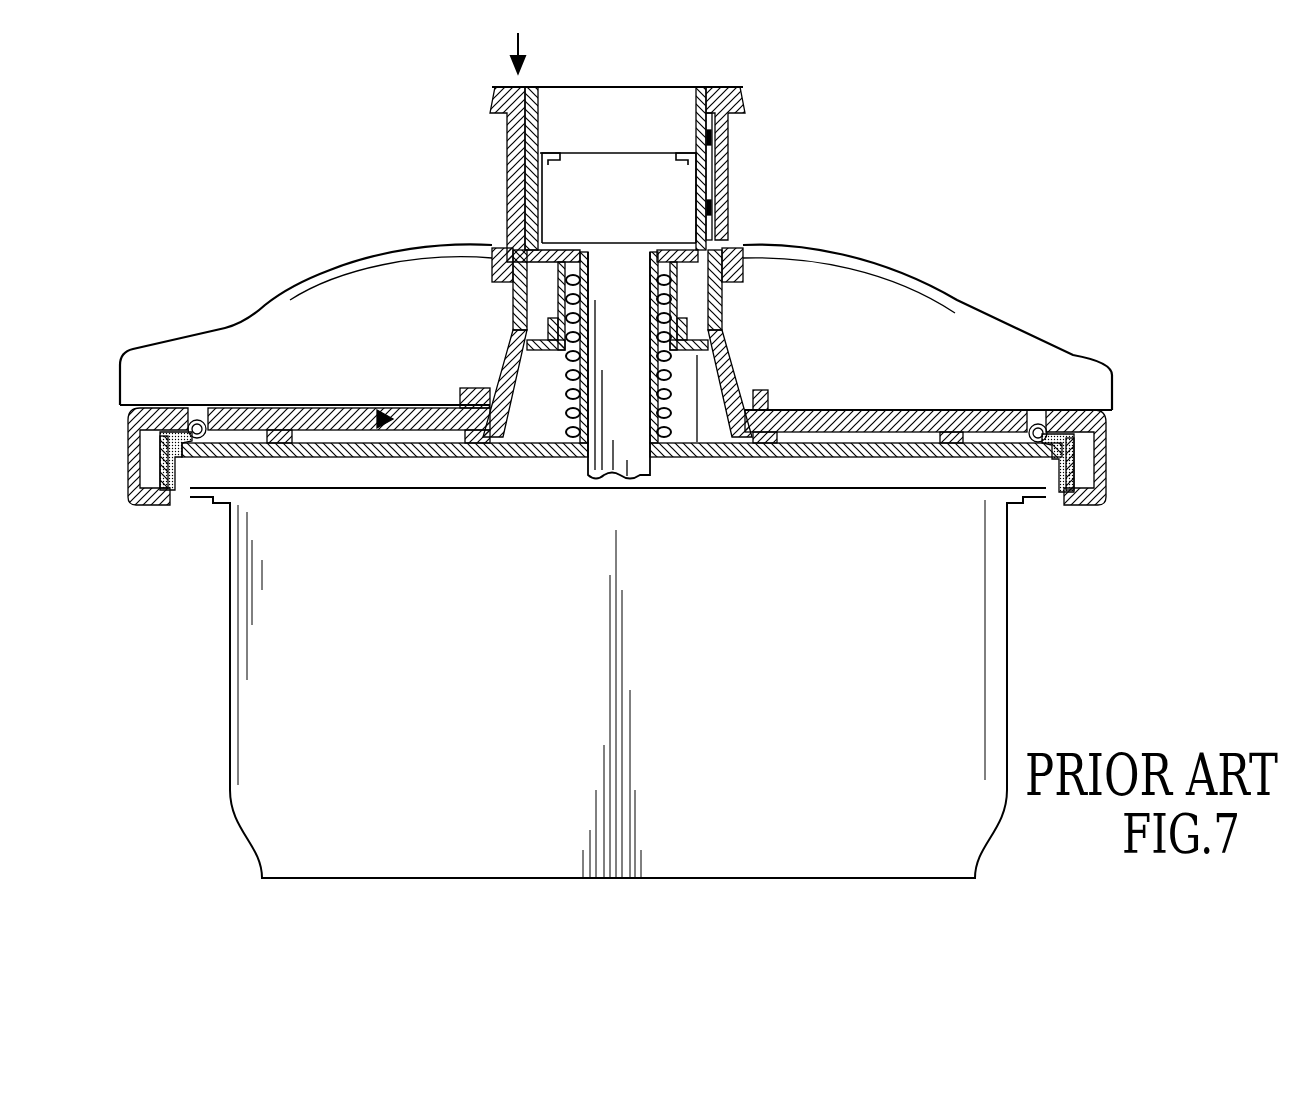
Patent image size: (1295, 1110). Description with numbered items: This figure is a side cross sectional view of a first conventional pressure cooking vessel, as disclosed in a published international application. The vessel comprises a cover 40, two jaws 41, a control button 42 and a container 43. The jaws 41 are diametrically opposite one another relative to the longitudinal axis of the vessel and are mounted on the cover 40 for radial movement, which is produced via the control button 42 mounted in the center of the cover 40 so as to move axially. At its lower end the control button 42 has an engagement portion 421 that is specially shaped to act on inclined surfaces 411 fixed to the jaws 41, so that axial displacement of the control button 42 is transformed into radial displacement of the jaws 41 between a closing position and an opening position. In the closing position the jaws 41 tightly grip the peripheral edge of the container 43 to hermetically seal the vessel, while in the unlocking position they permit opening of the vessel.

The cover 40 is at (817, 443).
The jaws 41 is at (302, 408).
The control button 42 is at (733, 190).
The engagement portion 421 is at (515, 306).
The inclined surfaces 411 is at (512, 362).
The container 43 is at (1010, 654).